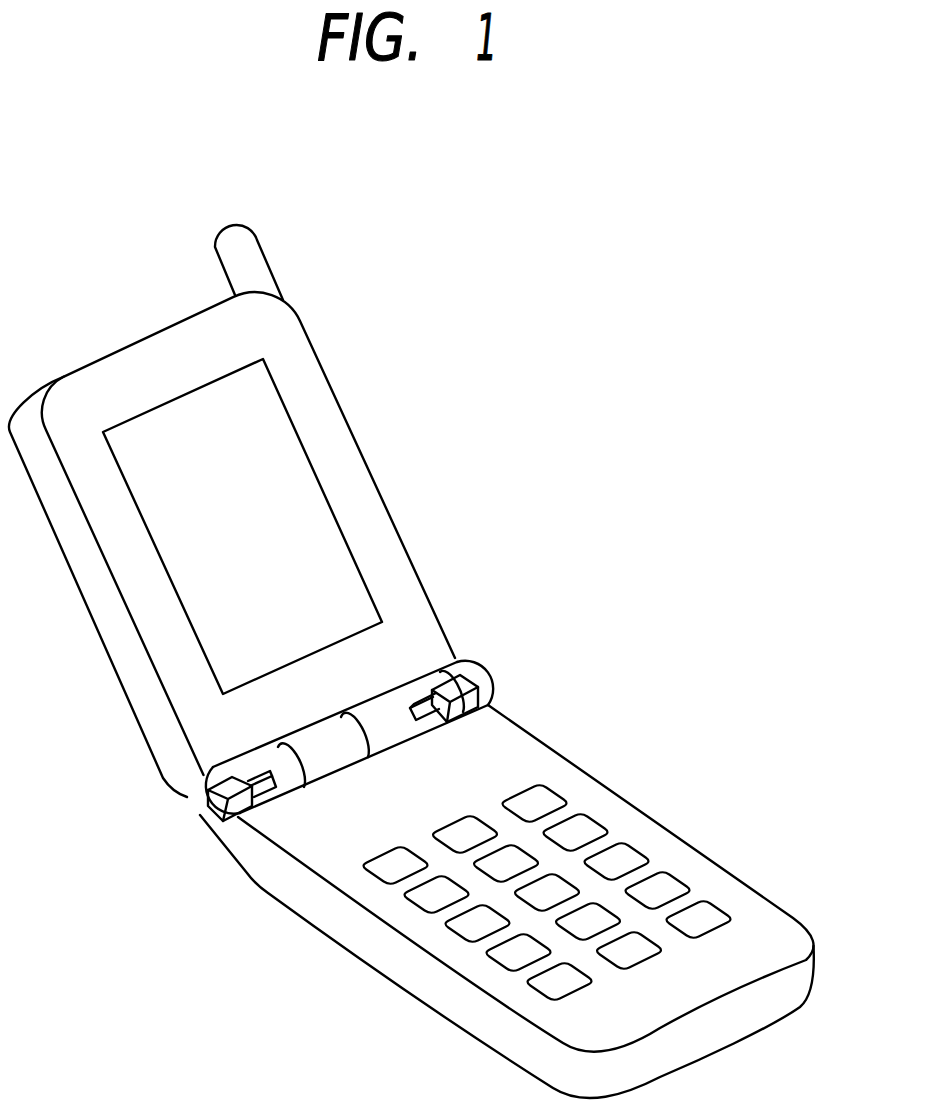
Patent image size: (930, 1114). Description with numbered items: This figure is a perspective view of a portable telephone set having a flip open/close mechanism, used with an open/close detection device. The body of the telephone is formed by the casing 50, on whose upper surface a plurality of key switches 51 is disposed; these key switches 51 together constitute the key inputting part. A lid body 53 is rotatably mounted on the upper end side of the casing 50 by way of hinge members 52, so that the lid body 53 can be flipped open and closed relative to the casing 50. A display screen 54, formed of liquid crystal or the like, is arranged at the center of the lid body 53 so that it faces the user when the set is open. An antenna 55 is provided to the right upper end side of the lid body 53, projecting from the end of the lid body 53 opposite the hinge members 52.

The casing 50 is at (780, 905).
The key switches 51 is at (547, 800).
The hinge members 52 is at (482, 675).
The lid body 53 is at (397, 528).
The display screen 54 is at (292, 473).
The antenna 55 is at (248, 270).